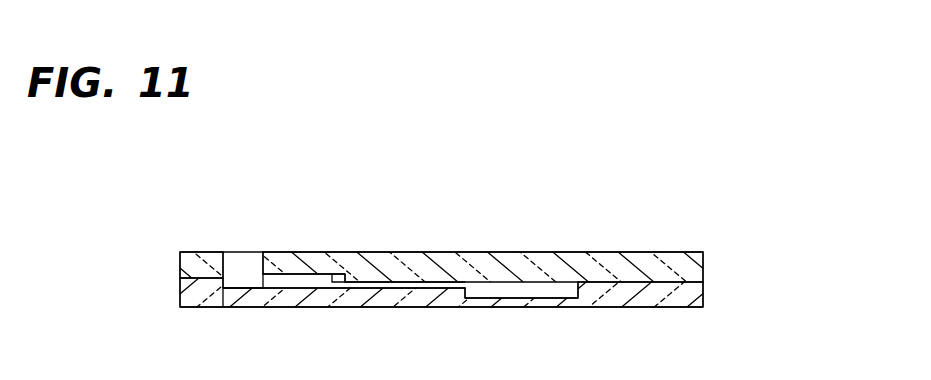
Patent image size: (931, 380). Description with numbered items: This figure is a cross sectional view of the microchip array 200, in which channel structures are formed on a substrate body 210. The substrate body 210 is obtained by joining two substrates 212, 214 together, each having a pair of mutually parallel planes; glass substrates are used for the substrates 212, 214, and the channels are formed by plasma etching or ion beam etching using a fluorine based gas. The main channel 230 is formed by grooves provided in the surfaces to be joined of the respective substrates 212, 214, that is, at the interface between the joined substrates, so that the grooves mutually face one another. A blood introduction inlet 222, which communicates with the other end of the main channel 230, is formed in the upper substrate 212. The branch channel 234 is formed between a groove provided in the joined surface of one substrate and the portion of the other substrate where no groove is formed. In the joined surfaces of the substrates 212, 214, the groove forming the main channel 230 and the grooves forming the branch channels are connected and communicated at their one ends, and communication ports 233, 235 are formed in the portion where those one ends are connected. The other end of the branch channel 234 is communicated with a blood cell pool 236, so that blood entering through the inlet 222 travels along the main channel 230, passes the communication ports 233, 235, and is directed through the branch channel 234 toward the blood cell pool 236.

The microchip array 200 is at (689, 221).
The substrate body 210 is at (785, 240).
The substrate 212 is at (684, 271).
The substrate 214 is at (684, 292).
The blood introduction inlet 222 is at (226, 264).
The main channel 230 is at (287, 280).
The communication port 233 is at (336, 278).
The branch channel 234 is at (403, 285).
The communication port 235 is at (334, 288).
The blood cell pool 236 is at (508, 288).